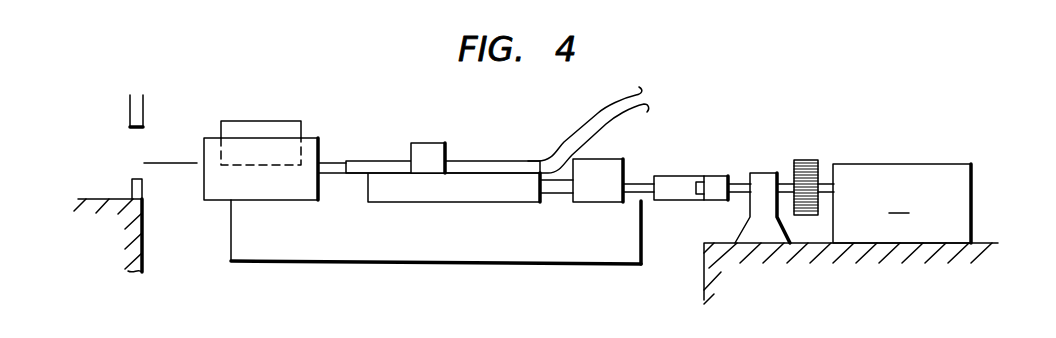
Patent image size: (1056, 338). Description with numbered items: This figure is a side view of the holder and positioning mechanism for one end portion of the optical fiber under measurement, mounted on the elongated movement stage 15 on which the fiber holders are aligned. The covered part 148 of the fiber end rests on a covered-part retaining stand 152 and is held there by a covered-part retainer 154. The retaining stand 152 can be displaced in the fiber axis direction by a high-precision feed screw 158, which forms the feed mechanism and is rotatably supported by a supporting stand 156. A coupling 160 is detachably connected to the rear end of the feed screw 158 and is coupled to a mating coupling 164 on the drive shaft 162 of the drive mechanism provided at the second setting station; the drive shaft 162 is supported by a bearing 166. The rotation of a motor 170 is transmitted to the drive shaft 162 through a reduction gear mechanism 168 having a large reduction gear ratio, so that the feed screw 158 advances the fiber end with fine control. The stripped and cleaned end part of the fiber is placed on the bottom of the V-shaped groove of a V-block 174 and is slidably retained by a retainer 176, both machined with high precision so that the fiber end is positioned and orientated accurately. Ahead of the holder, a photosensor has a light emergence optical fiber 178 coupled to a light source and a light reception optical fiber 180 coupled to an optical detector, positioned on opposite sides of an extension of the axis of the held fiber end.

The movement stage 15 is at (229, 246).
The covered part 148 is at (583, 127).
The covered-part retaining stand 152 is at (432, 196).
The covered-part retainer 154 is at (428, 139).
The supporting stand 156 is at (606, 156).
The feed screw 158 is at (644, 199).
The coupling 160 is at (673, 178).
The drive shaft 162 is at (741, 177).
The coupling 164 is at (718, 175).
The bearing 166 is at (765, 242).
The reduction gear mechanism 168 is at (808, 157).
The motor 170 is at (936, 161).
The V-block 174 is at (275, 190).
The retainer 176 is at (283, 118).
The light emergence optical fiber 178 is at (128, 97).
The light reception optical fiber 180 is at (129, 187).